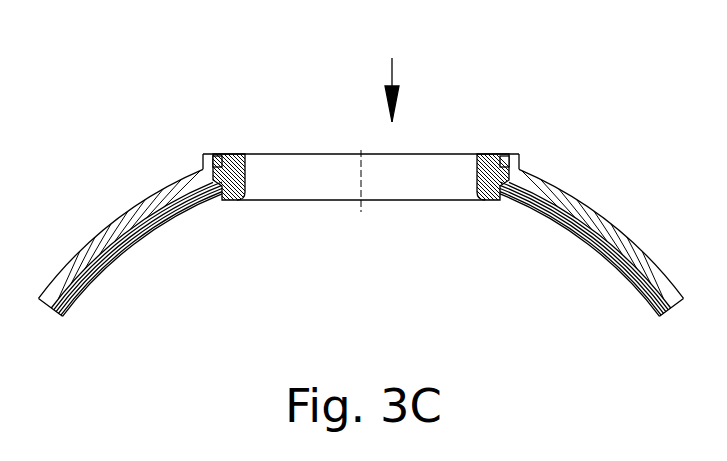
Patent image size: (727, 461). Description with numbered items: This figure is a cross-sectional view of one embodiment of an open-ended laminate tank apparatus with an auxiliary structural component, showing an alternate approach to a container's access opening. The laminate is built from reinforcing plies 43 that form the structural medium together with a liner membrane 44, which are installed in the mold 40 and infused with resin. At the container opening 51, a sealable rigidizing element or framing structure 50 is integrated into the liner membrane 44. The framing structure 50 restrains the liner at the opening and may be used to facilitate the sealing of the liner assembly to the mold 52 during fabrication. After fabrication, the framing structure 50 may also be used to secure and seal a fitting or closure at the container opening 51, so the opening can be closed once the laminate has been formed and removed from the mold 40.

The mold 40 is at (578, 198).
The reinforcing plies 43 is at (100, 268).
The liner membrane 44 is at (143, 231).
The framing structure 50 is at (247, 167).
The container opening 51 is at (392, 74).
The mold 52 is at (507, 153).